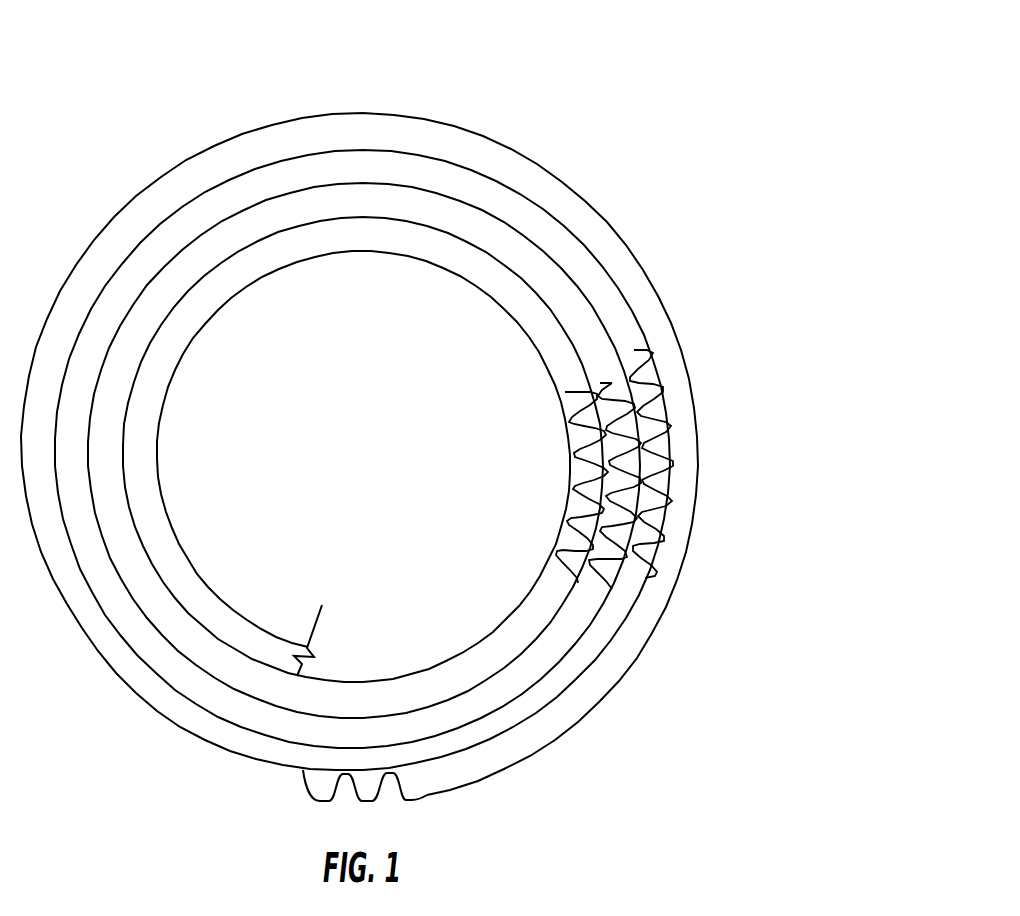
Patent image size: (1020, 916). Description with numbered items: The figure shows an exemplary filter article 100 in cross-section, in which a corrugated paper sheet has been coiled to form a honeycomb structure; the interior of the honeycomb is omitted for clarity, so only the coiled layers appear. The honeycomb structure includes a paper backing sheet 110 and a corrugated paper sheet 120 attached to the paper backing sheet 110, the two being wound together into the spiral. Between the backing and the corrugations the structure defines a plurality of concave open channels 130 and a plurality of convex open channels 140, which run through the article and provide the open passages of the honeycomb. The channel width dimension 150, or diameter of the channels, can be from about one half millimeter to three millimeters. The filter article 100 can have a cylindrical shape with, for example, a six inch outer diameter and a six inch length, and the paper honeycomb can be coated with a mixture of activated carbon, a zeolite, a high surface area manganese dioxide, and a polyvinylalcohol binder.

The filter article 100 is at (407, 406).
The paper backing sheet 110 is at (612, 222).
The corrugated paper sheet 120 is at (640, 350).
The concave open channels 130 is at (650, 405).
The convex open channels 140 is at (655, 440).
The channel width dimension 150 is at (640, 442).